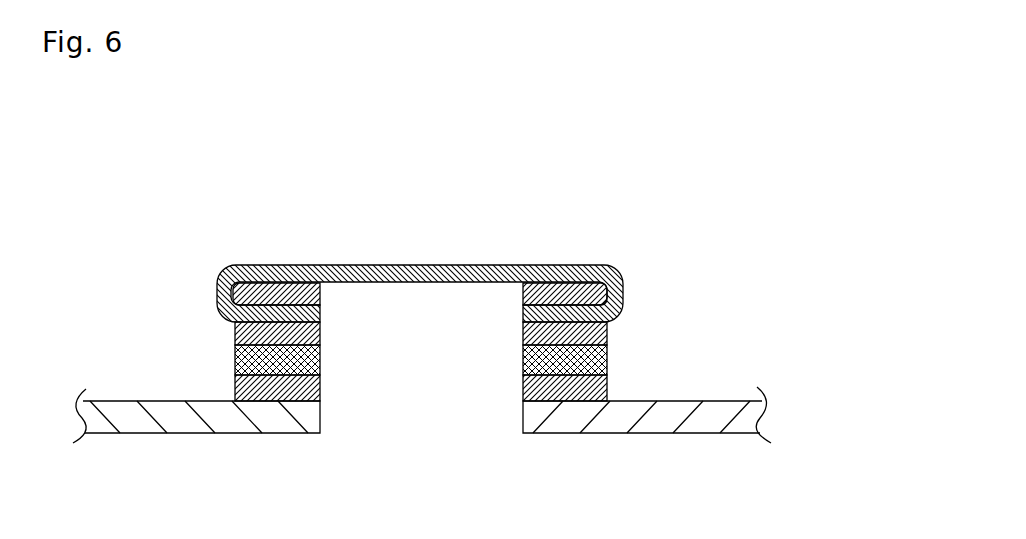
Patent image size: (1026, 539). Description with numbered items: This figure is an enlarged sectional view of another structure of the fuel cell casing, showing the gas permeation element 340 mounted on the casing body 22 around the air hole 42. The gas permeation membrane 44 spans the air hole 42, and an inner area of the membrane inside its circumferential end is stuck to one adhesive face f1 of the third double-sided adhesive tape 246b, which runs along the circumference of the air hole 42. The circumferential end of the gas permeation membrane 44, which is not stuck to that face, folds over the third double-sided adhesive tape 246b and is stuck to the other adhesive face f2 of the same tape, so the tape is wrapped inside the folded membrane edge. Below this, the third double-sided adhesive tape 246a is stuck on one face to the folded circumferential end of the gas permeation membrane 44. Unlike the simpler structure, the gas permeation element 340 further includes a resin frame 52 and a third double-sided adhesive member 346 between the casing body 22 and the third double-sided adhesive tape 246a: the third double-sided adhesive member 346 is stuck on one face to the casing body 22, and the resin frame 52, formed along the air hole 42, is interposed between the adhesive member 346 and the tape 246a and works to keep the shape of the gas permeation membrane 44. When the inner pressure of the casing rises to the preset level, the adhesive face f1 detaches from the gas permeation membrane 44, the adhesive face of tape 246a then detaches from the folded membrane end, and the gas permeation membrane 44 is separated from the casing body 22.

The gas permeation element 340 is at (493, 181).
The gas permeation membrane 44 is at (562, 266).
The third double-sided adhesive tape 246b is at (604, 287).
The third double-sided adhesive tape 246a is at (604, 324).
The resin frame 52 is at (606, 352).
The third double-sided adhesive member 346 is at (607, 380).
The casing body 22 is at (708, 410).
The air hole 42 is at (408, 420).
The adhesive face f1 is at (597, 290).
The adhesive face f2 is at (605, 287).